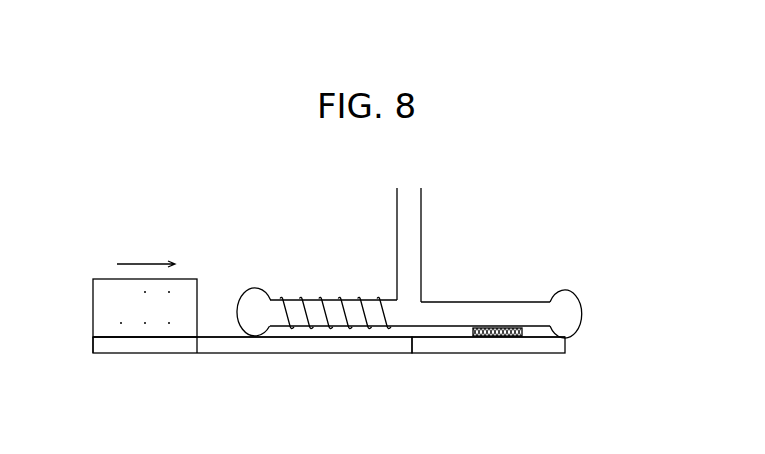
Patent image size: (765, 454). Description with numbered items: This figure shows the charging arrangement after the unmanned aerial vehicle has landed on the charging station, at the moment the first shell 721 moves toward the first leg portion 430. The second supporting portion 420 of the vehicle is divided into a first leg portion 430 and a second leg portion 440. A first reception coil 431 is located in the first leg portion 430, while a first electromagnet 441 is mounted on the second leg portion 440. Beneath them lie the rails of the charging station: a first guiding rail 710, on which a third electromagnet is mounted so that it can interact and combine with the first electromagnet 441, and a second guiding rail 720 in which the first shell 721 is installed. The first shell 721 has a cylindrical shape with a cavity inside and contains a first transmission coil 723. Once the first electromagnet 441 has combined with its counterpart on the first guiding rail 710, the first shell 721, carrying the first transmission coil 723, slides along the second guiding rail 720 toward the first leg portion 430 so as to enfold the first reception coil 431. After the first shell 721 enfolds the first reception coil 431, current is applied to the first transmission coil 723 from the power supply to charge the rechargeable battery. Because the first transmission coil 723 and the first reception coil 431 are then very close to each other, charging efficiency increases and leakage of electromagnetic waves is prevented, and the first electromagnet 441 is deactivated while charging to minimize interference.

The second supporting portion 420 is at (593, 318).
The first leg portion 430 is at (383, 299).
The first reception coil 431 is at (302, 299).
The second leg portion 440 is at (539, 313).
The first electromagnet 441 is at (498, 336).
The first guiding rail 710 is at (545, 347).
The second guiding rail 720 is at (315, 345).
The first shell 721 is at (92, 320).
The first transmission coil 723 is at (120, 292).